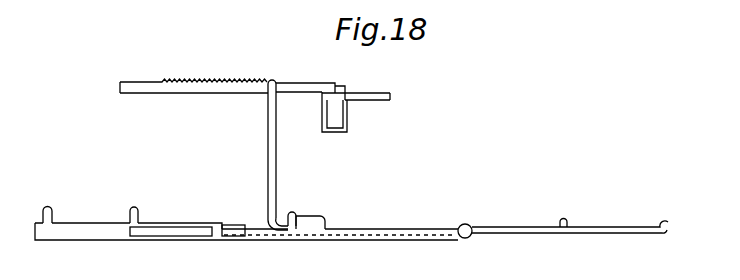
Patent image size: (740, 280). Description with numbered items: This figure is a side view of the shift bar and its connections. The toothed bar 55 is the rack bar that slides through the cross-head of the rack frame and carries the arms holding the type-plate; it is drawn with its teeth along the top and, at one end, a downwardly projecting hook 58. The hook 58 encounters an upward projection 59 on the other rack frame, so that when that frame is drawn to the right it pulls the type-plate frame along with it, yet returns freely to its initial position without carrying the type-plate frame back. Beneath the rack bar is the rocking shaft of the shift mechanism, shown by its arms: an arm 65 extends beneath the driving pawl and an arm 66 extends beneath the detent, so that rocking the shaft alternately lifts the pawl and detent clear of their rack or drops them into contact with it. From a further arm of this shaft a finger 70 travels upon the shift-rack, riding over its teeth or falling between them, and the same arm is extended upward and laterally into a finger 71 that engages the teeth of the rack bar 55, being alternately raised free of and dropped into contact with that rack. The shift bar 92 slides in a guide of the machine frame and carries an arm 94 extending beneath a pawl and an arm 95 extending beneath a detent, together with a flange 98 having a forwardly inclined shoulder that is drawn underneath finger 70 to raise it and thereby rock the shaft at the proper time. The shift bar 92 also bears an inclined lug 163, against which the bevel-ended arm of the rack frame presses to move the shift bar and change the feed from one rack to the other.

The toothed bar 55 is at (120, 88).
The finger 71 is at (271, 80).
The downwardly projecting hook 58 is at (341, 93).
The upward projection 59 is at (323, 101).
The arm 94 is at (48, 210).
The arm 95 is at (136, 210).
The shift bar 92 is at (214, 226).
The inclined lug 163 is at (238, 226).
The finger 70 is at (294, 216).
The flange 98 is at (325, 214).
The arm 65 is at (664, 235).
The arm 66 is at (565, 222).